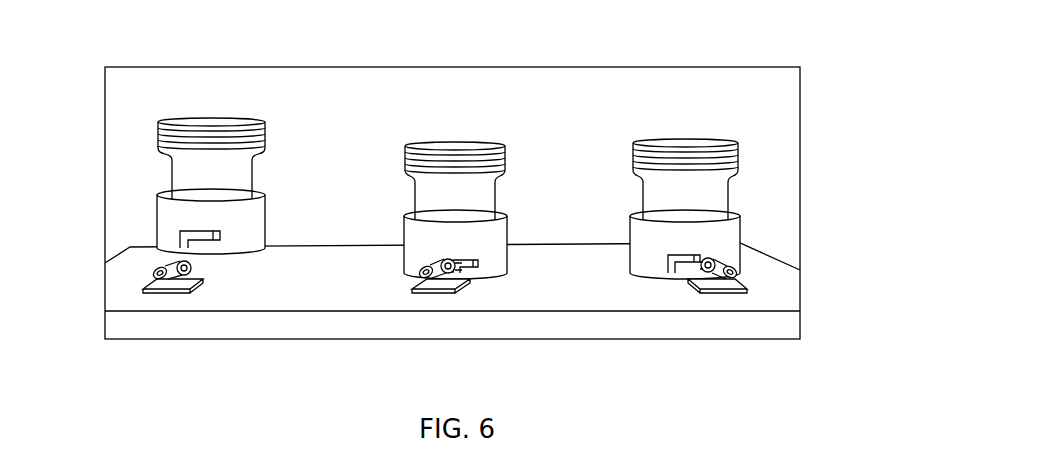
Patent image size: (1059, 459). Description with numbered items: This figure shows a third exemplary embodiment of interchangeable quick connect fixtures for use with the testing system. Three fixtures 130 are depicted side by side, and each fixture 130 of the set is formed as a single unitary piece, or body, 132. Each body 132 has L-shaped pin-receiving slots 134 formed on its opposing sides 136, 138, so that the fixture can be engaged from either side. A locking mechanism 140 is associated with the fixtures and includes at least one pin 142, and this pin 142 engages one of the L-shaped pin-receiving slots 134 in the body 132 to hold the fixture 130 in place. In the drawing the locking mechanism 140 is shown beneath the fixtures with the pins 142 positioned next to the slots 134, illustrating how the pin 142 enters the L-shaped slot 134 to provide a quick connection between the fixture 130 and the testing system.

The interchangeable quick connect fixture 130 is at (224, 122).
The single unitary piece or body 132 is at (157, 213).
The L-shaped pin-receiving slot 134 is at (217, 241).
The side of the body 136 is at (153, 137).
The opposing side of the body 138 is at (263, 152).
The locking mechanism 140 is at (160, 299).
The pin 142 is at (153, 273).